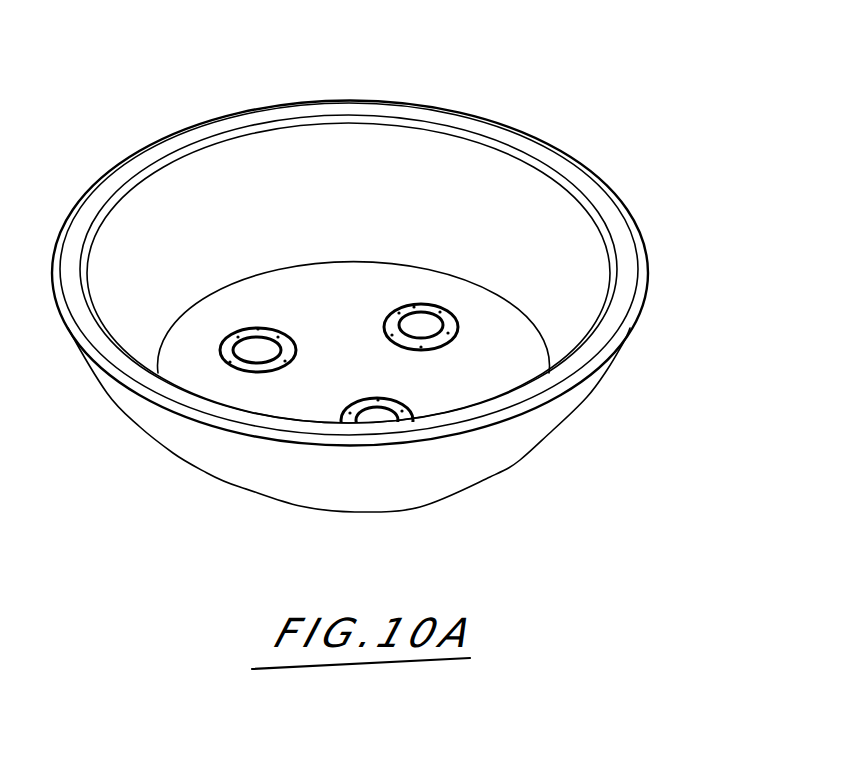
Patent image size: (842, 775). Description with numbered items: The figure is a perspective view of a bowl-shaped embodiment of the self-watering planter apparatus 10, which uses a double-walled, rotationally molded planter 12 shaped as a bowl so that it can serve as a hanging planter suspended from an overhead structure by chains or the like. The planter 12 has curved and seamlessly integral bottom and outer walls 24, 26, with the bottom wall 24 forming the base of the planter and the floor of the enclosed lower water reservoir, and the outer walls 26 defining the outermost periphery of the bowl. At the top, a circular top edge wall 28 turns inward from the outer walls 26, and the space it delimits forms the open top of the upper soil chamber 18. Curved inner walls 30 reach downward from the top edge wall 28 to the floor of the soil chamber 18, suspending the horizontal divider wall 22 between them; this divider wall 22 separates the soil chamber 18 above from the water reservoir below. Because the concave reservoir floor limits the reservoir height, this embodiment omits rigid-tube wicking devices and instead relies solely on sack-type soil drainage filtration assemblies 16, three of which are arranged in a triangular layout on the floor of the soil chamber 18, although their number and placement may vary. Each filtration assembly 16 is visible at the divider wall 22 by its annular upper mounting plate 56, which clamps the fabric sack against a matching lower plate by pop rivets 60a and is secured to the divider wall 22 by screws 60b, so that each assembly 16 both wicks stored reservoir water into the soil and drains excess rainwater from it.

The planter apparatus 10 is at (397, 312).
The planter 12 is at (652, 219).
The soil drainage filtration assembly 16 is at (347, 321).
The upper soil chamber 18 is at (424, 139).
The divider wall 22 is at (479, 304).
The bottom wall 24 is at (362, 512).
The outer walls 26 is at (568, 402).
The top edge wall 28 is at (178, 137).
The inner walls 30 is at (343, 135).
The upper mounting plate 56 is at (233, 346).
The pop rivets 60a is at (398, 318).
The screws 60b is at (414, 306).